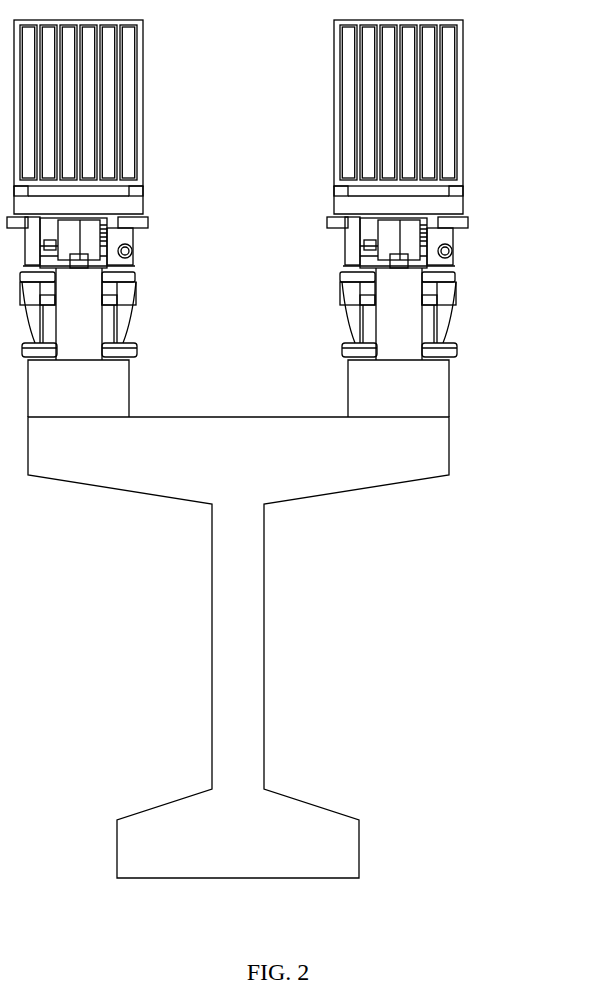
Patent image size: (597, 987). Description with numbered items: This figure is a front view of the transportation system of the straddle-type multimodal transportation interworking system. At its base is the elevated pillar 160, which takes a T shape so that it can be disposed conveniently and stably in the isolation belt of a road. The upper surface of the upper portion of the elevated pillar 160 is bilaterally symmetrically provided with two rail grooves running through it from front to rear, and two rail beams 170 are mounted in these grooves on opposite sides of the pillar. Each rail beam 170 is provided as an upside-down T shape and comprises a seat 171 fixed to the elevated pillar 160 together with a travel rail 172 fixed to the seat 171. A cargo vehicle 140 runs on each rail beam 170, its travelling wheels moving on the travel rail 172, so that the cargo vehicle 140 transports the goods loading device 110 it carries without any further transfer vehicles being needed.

The goods loading device 110 is at (360, 122).
The cargo vehicle 140 is at (357, 252).
The elevated pillar 160 is at (258, 458).
The rail beam 170 is at (83, 391).
The seat 171 is at (412, 395).
The travel rail 172 is at (393, 317).